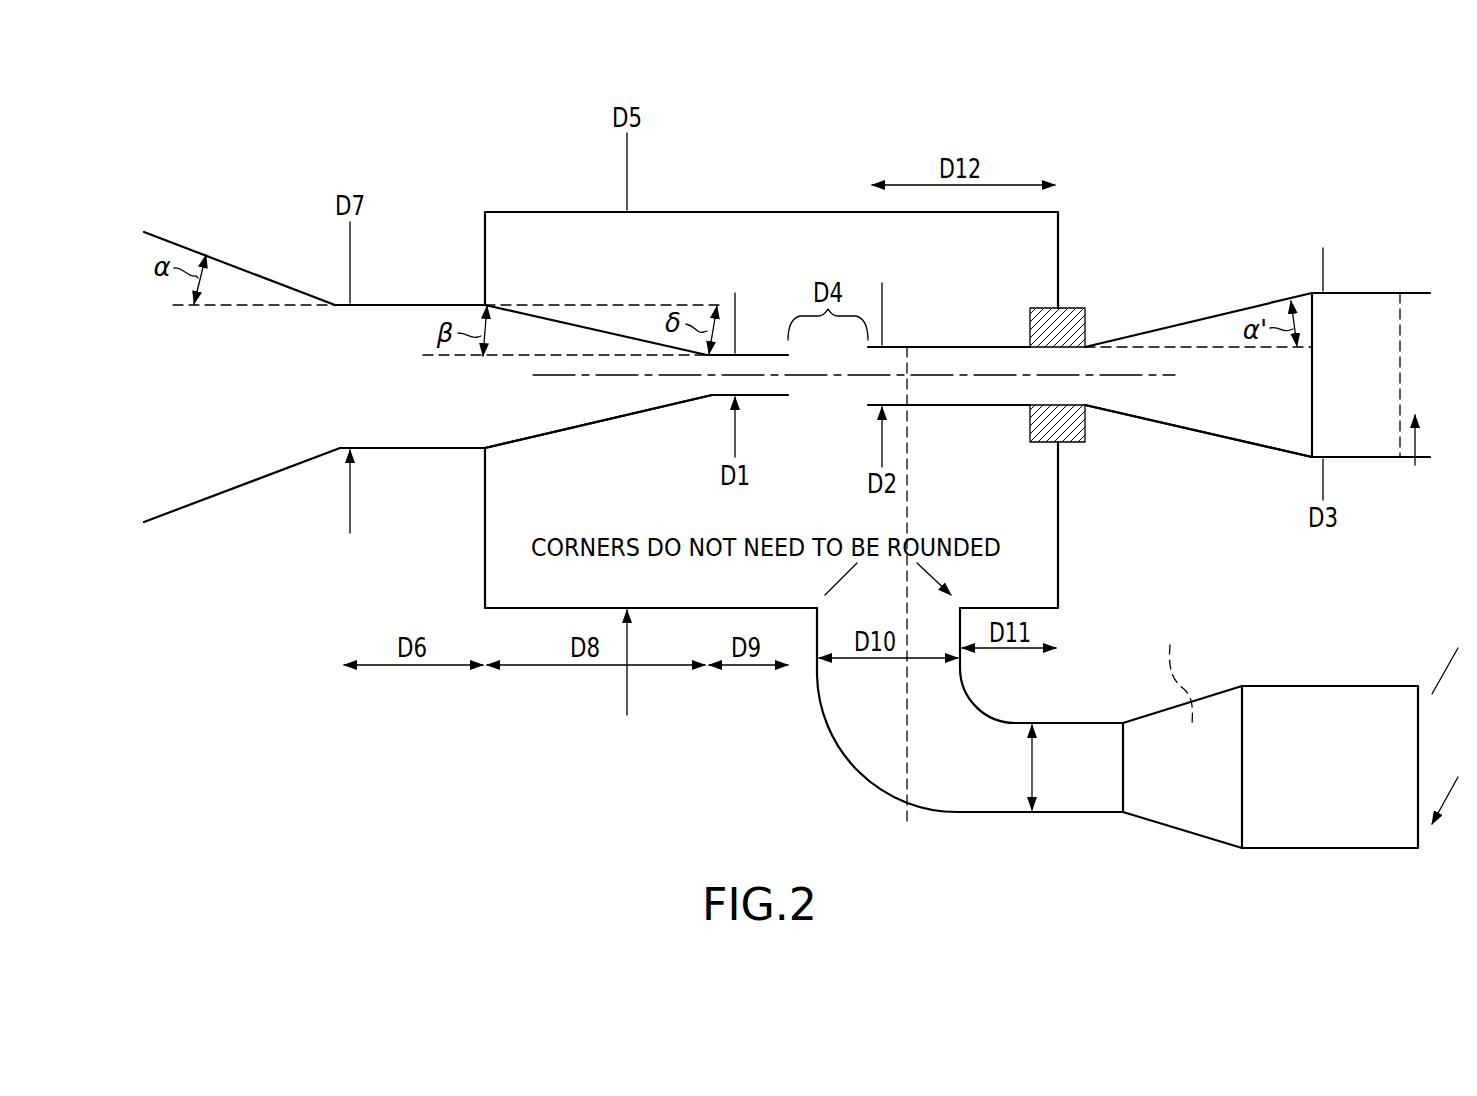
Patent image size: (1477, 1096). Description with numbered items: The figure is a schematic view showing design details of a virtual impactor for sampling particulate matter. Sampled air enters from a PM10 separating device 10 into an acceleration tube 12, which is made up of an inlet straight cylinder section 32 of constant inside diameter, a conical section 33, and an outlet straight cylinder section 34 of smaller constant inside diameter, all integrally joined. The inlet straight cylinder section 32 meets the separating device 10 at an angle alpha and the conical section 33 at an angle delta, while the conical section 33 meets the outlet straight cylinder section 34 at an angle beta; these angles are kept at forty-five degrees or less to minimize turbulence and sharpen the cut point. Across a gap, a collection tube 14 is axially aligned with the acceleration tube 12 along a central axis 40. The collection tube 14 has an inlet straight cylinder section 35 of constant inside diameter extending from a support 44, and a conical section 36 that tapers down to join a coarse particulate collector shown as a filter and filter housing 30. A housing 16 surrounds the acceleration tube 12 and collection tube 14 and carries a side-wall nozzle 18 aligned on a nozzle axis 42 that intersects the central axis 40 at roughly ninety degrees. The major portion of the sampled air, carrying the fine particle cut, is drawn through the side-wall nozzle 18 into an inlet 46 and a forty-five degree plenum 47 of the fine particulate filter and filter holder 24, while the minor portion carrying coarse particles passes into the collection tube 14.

The PM10 separating device 10 is at (250, 425).
The inlet straight cylinder section 32 is at (432, 425).
The conical section 33 is at (547, 425).
The acceleration tube 12 is at (631, 430).
The outlet straight cylinder section 34 is at (774, 397).
The inlet straight cylinder section 35 is at (982, 388).
The central axis 40 is at (1003, 372).
The support 44 is at (1086, 325).
The conical section 36 is at (1262, 392).
The collection tube 14 is at (1147, 430).
The filter and filter housing 30 is at (1445, 370).
The housing 16 is at (531, 211).
The side-wall nozzle 18 is at (897, 728).
The nozzle axis 42 is at (905, 772).
The inlet 46 is at (1088, 722).
The 45° plenum 47 is at (1200, 785).
The filter and filter holder 24 is at (1347, 785).